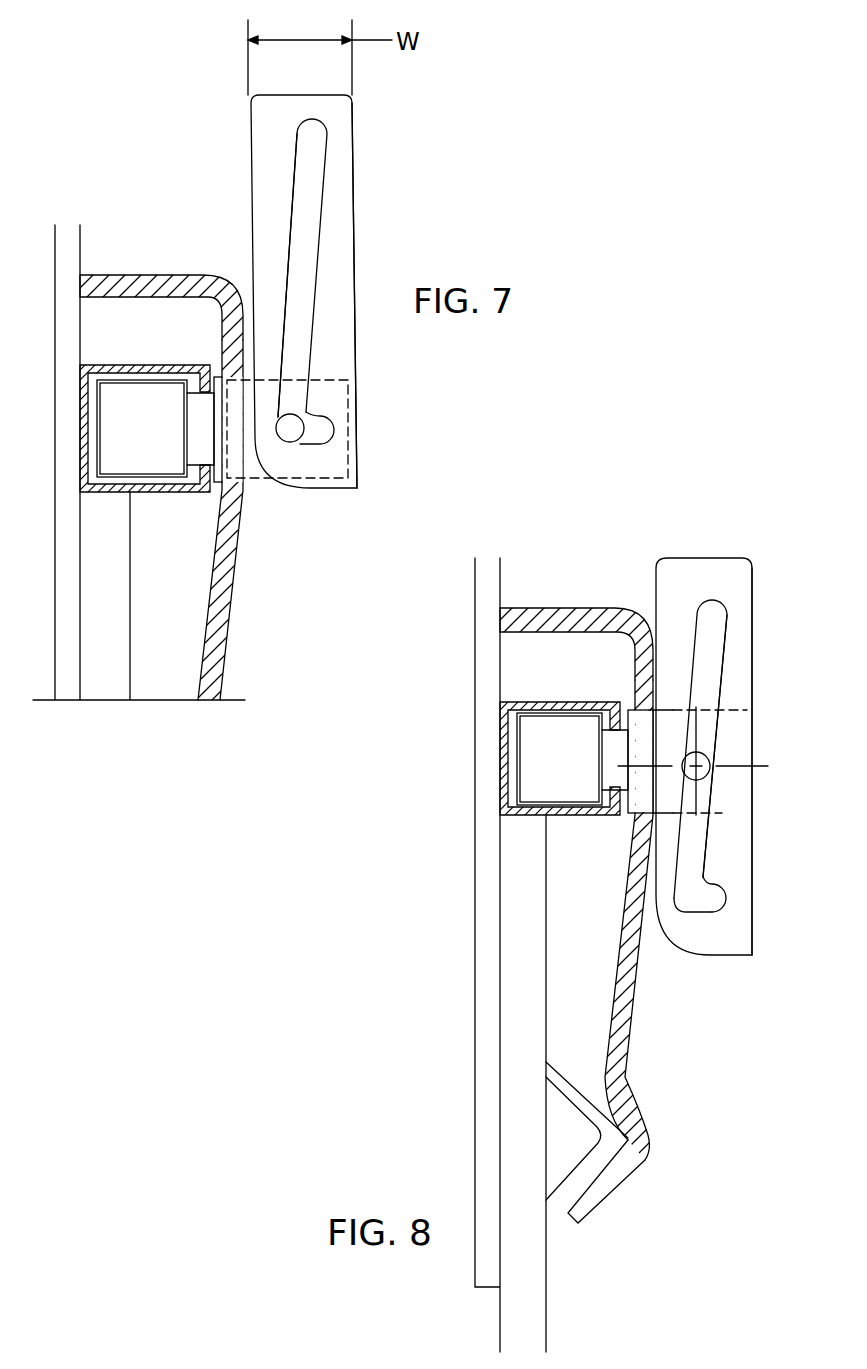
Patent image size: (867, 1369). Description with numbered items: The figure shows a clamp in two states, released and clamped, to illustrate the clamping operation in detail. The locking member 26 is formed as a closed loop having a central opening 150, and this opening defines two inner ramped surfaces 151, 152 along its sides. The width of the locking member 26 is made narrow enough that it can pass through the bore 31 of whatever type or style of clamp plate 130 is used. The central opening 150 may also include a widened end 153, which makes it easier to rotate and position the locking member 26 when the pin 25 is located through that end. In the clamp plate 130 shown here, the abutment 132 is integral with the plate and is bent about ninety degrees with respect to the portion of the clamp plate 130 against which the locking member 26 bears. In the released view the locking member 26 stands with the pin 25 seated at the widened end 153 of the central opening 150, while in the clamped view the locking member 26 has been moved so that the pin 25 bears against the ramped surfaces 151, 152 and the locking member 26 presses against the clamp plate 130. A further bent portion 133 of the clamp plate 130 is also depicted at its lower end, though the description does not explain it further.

In FIG. 7, the pin 25 is at (292, 428).
In FIG. 8, the pin 25 is at (703, 770).
In FIG. 7, the locking member 26 is at (332, 117).
In FIG. 8, the locking member 26 is at (733, 943).
In FIG. 7, the bore 31 is at (237, 507).
In FIG. 8, the bore 31 is at (635, 865).
In FIG. 7, the clamp plate 130 is at (227, 620).
In FIG. 8, the clamp plate 130 is at (613, 1077).
In FIG. 7, the abutment 132 is at (153, 287).
In FIG. 8, the abutment 132 is at (583, 610).
In FIG. 8, the bent lip 133 is at (620, 1181).
In FIG. 7, the central opening 150 is at (305, 225).
In FIG. 8, the central opening 150 is at (690, 842).
In FIG. 7, the inner ramped surface 151 is at (297, 172).
In FIG. 8, the inner ramped surface 151 is at (695, 637).
In FIG. 7, the inner ramped surface 152 is at (315, 278).
In FIG. 8, the inner ramped surface 152 is at (720, 668).
In FIG. 7, the widened end 153 is at (320, 438).
In FIG. 8, the widened end 153 is at (695, 897).